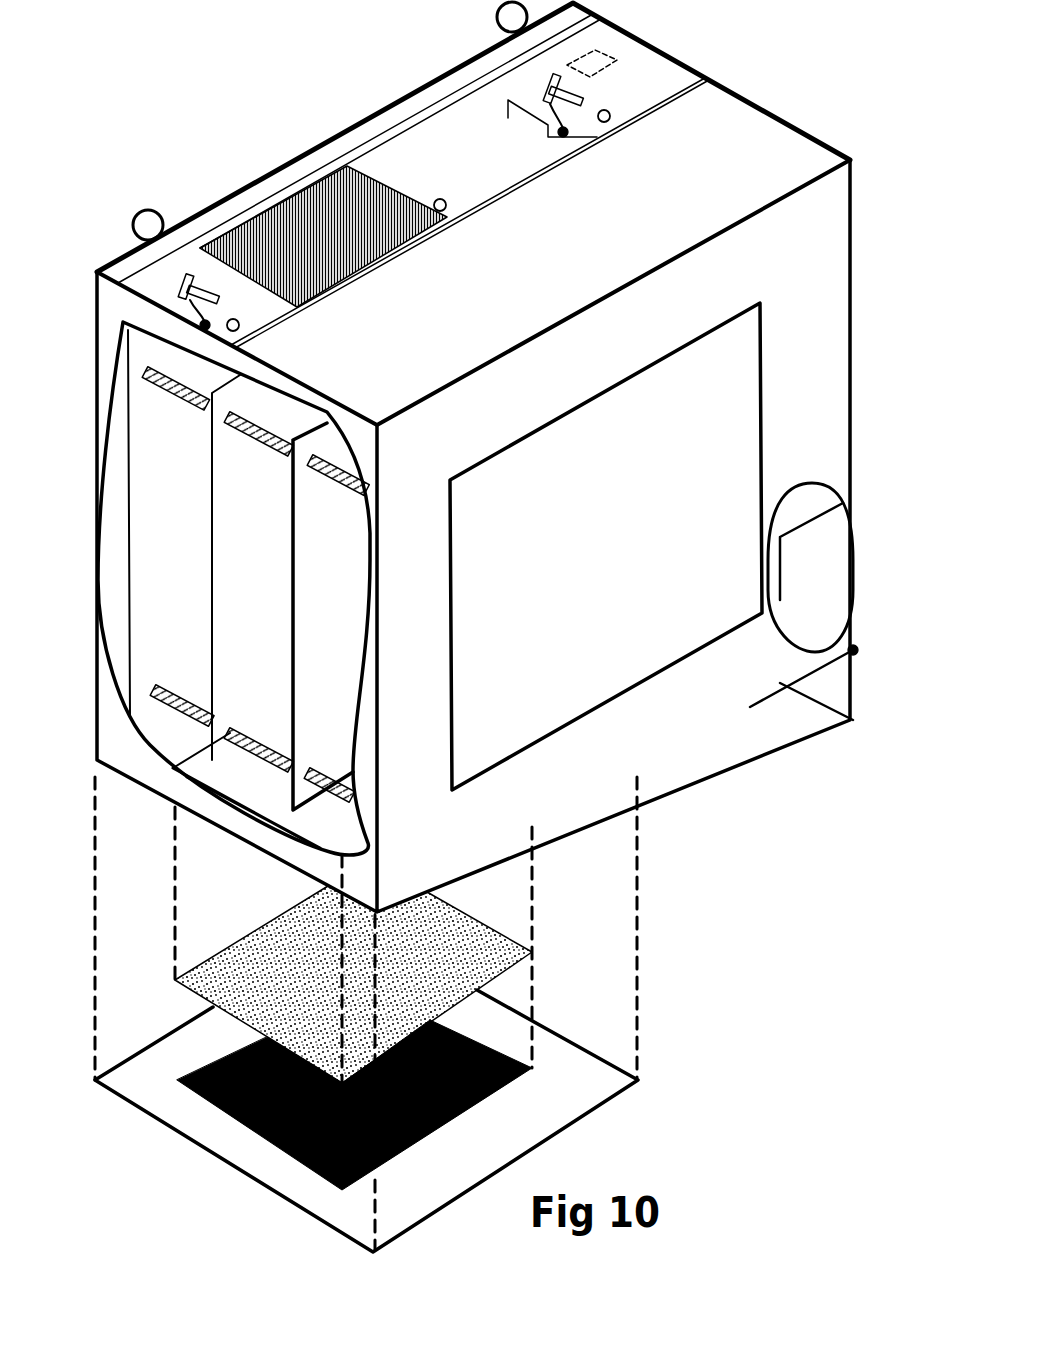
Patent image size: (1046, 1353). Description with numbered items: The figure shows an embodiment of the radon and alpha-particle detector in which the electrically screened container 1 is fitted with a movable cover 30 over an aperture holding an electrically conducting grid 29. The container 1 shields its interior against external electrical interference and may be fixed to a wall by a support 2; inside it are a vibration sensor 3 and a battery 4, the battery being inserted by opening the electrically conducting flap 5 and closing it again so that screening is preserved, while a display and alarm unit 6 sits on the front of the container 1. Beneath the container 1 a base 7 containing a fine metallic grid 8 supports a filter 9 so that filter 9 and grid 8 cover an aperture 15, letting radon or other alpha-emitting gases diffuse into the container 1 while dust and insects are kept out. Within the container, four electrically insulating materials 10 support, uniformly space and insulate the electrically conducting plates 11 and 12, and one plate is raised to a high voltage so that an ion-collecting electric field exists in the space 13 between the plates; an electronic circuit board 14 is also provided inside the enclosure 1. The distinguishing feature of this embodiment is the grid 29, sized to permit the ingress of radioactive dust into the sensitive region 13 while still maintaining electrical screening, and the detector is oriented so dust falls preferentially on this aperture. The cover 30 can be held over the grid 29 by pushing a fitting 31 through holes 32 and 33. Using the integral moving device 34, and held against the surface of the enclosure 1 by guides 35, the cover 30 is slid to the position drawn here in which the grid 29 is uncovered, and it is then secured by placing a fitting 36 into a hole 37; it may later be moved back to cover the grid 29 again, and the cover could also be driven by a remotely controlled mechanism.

The electrically screened container 1 is at (97, 268).
The support 2 is at (148, 208).
The vibration sensor 3 is at (598, 62).
The battery 4 is at (799, 593).
The electrically conducting flap 5 is at (847, 730).
The display and alarm unit 6 is at (752, 588).
The base 7 is at (632, 1098).
The fine metallic grid 8 is at (420, 1142).
The filter 9 is at (502, 977).
The electrically insulating materials 10 is at (150, 385).
The electrically conducting plate 11 is at (130, 433).
The electrically conducting plate 12 is at (212, 490).
The space between the plates 13 is at (183, 557).
The electronic circuit board 14 is at (293, 622).
The aperture 15 is at (243, 813).
The electrically conducting grid 29 is at (320, 288).
The movable cover 30 is at (465, 193).
The fitting 31 is at (167, 293).
The hole 32 is at (240, 325).
The hole 33 is at (452, 208).
The integral moving device 34 is at (565, 134).
The guides 35 is at (515, 182).
The fitting 36 is at (542, 85).
The hole 37 is at (611, 116).